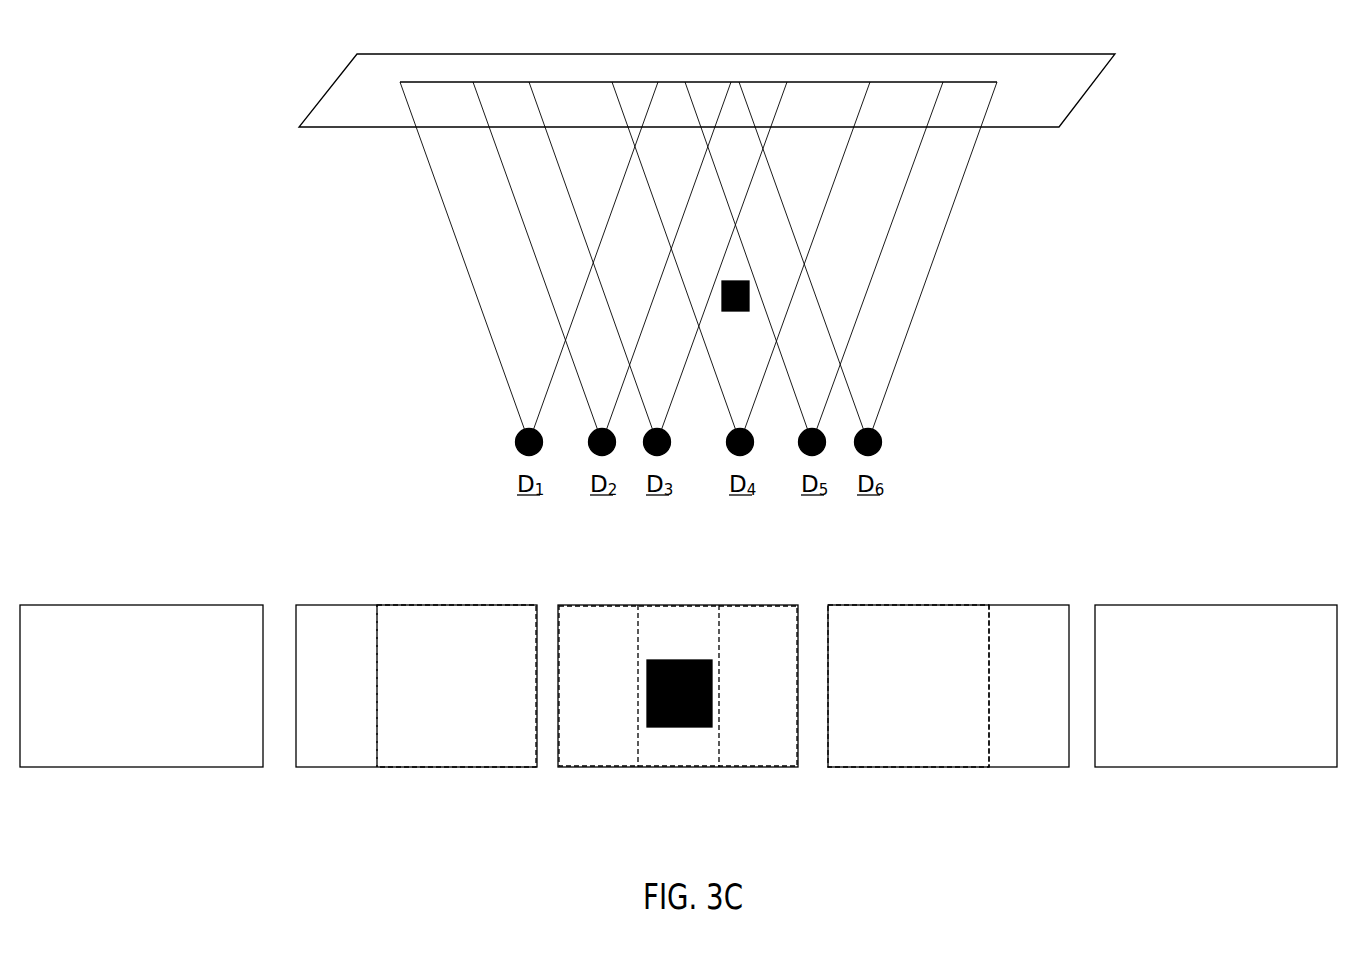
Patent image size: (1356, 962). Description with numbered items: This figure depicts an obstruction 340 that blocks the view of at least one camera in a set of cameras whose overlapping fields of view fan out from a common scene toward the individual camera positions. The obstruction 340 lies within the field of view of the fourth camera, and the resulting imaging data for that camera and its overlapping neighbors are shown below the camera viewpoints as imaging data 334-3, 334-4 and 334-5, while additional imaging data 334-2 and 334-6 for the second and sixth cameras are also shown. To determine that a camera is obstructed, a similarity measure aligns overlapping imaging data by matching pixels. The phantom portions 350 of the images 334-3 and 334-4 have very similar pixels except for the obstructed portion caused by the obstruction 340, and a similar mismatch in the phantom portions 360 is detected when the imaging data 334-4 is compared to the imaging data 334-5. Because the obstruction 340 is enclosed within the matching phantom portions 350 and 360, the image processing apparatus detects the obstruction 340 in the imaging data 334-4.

The obstruction 340 is at (763, 296).
The phantom portions 350 is at (374, 746).
The phantom portions 360 is at (635, 758).
The imaging data 334-2 is at (173, 596).
The imaging data 334-3 is at (439, 596).
The imaging data 334-4 is at (723, 596).
The imaging data 334-5 is at (962, 596).
The imaging data 334-6 is at (1243, 596).